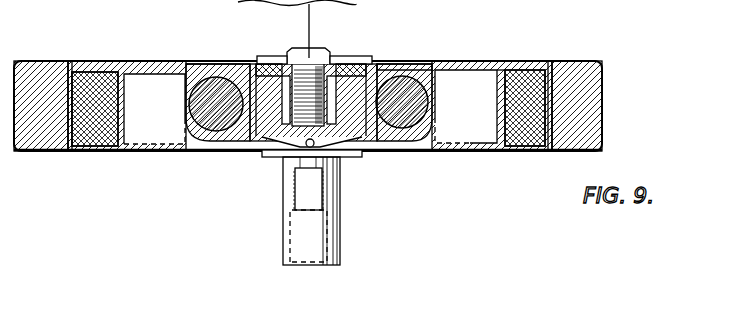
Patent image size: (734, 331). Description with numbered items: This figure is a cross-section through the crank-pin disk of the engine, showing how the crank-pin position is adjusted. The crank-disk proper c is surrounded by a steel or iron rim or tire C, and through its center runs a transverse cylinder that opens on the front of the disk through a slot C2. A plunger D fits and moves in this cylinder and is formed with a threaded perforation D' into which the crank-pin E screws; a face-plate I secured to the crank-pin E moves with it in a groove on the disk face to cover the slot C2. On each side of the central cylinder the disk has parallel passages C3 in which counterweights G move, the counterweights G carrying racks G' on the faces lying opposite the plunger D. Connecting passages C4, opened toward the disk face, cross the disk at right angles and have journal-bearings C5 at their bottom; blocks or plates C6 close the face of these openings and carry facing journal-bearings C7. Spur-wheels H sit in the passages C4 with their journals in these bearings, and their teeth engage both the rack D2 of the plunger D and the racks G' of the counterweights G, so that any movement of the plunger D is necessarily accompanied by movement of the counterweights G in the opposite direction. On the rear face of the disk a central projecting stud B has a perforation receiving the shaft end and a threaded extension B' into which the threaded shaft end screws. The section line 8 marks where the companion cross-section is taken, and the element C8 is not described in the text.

The rim C is at (573, 152).
The rack D2 is at (490, 160).
The counterweight G is at (310, 107).
The rack G' is at (300, 112).
The parallel passage C3 is at (448, 174).
The connecting passage C4 is at (402, 172).
The journal-bearing C5 is at (262, 148).
The face-plate I is at (282, 80).
The plunger D is at (303, 73).
The threaded perforation D' is at (328, 40).
The crank-pin E is at (337, 55).
The section-line 8 is at (316, 31).
The slot C2 is at (355, 62).
The journal-bearing C7 is at (418, 50).
The block or plate C6 is at (454, 48).
The spur-wheel H is at (512, 57).
The crank-disk proper c is at (541, 62).
The bottom plate C8 is at (340, 156).
The central projecting stud B is at (299, 211).
The threaded extension B' is at (335, 215).